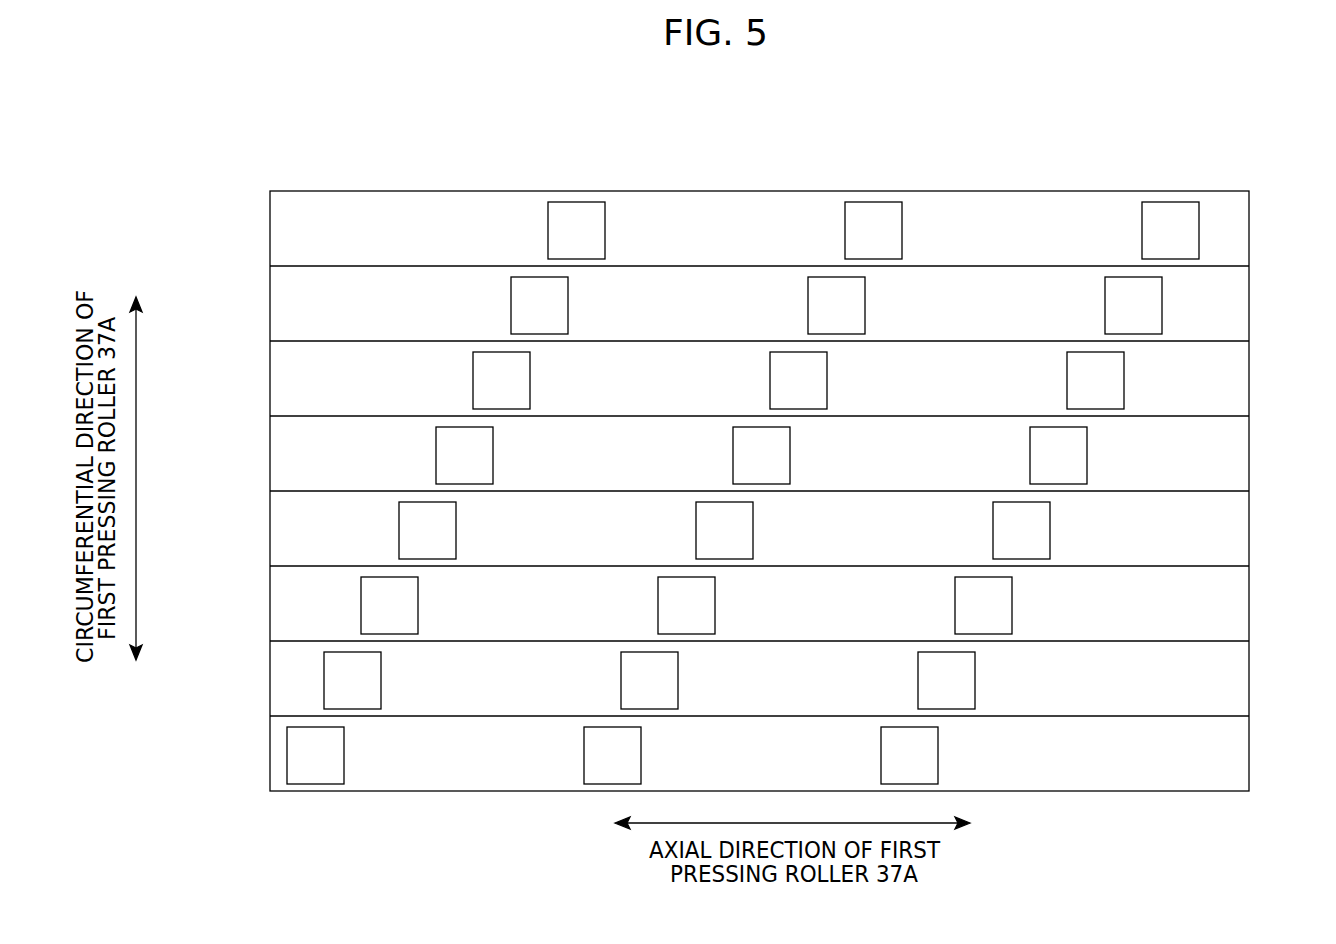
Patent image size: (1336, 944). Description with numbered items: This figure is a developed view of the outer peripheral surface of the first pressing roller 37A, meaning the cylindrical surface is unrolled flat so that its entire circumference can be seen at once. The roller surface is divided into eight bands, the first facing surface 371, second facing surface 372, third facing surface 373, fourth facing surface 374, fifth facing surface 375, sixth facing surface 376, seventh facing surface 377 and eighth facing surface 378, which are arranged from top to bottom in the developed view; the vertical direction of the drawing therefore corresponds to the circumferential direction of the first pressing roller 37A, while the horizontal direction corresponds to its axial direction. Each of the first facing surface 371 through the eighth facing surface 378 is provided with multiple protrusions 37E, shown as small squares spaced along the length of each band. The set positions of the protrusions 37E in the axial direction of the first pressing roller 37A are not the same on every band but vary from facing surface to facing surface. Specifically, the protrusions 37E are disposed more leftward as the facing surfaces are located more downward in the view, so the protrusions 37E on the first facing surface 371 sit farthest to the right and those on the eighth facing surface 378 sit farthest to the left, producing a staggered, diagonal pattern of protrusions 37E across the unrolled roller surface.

The first pressing roller 37A is at (1233, 178).
The protrusion 37E is at (576, 212).
The first facing surface 371 is at (277, 229).
The second facing surface 372 is at (277, 304).
The third facing surface 373 is at (277, 379).
The fourth facing surface 374 is at (277, 454).
The fifth facing surface 375 is at (277, 529).
The sixth facing surface 376 is at (277, 604).
The seventh facing surface 377 is at (277, 679).
The eighth facing surface 378 is at (277, 754).